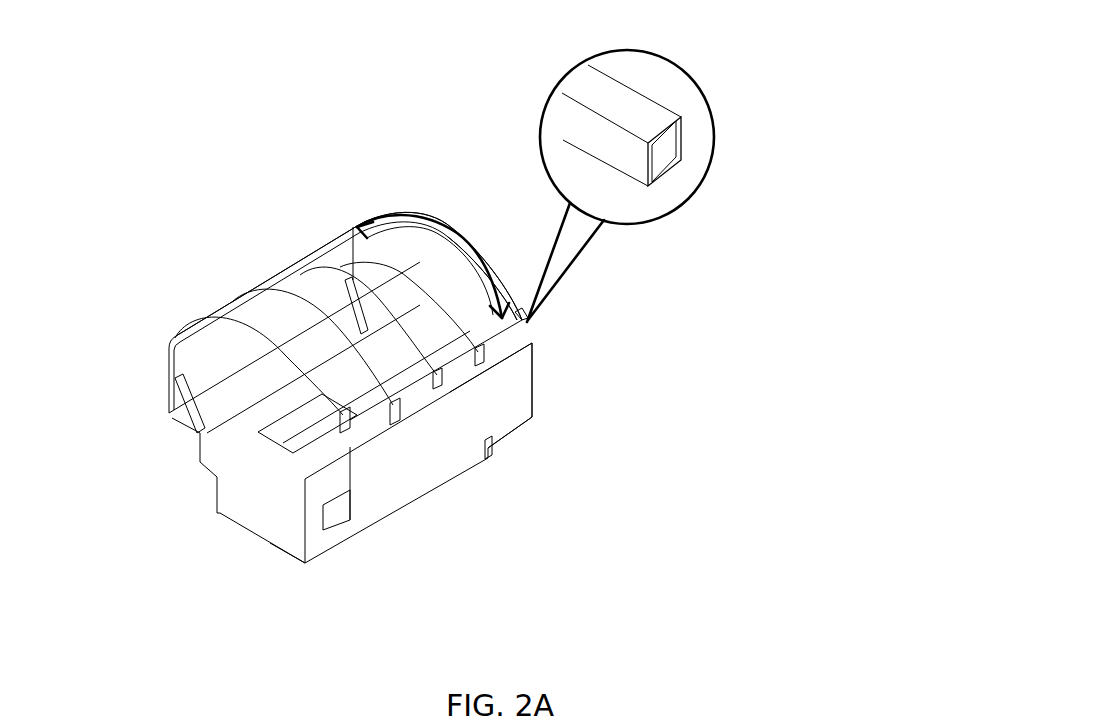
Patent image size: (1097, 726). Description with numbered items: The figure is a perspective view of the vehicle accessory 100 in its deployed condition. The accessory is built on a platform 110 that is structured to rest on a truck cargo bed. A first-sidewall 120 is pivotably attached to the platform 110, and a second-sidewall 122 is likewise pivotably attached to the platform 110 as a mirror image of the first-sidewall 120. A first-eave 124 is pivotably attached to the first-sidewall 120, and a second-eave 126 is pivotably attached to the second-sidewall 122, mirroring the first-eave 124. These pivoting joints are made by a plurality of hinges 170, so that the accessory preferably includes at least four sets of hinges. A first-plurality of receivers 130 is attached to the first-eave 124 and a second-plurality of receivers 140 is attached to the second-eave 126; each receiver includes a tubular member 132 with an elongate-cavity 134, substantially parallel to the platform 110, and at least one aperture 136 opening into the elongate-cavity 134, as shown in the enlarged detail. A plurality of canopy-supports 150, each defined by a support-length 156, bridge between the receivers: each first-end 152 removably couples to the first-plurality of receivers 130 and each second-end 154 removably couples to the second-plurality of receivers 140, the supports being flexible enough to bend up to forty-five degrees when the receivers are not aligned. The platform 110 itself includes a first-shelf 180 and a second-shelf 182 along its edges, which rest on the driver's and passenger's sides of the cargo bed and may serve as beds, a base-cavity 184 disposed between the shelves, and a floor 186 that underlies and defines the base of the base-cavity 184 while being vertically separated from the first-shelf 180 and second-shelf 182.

The vehicle accessory 100 is at (852, 42).
The platform 110 is at (220, 514).
The first-sidewall 120 is at (222, 330).
The second-sidewall 122 is at (525, 402).
The first-eave 124 is at (267, 282).
The second-eave 126 is at (520, 335).
The first-plurality of receivers 130 is at (357, 223).
The tubular member 132 is at (630, 86).
The elongate-cavity 134 is at (672, 146).
The aperture 136 is at (677, 167).
The second-plurality of receivers 140 is at (527, 323).
The plurality of canopy-supports 150 is at (463, 237).
The first-end 152 is at (395, 212).
The second-end 154 is at (520, 313).
The support-length 156 is at (418, 228).
The plurality of hinges 170 is at (505, 433).
The first-shelf 180 is at (180, 414).
The second-shelf 182 is at (344, 505).
The base-cavity 184 is at (313, 448).
The floor 186 is at (279, 548).